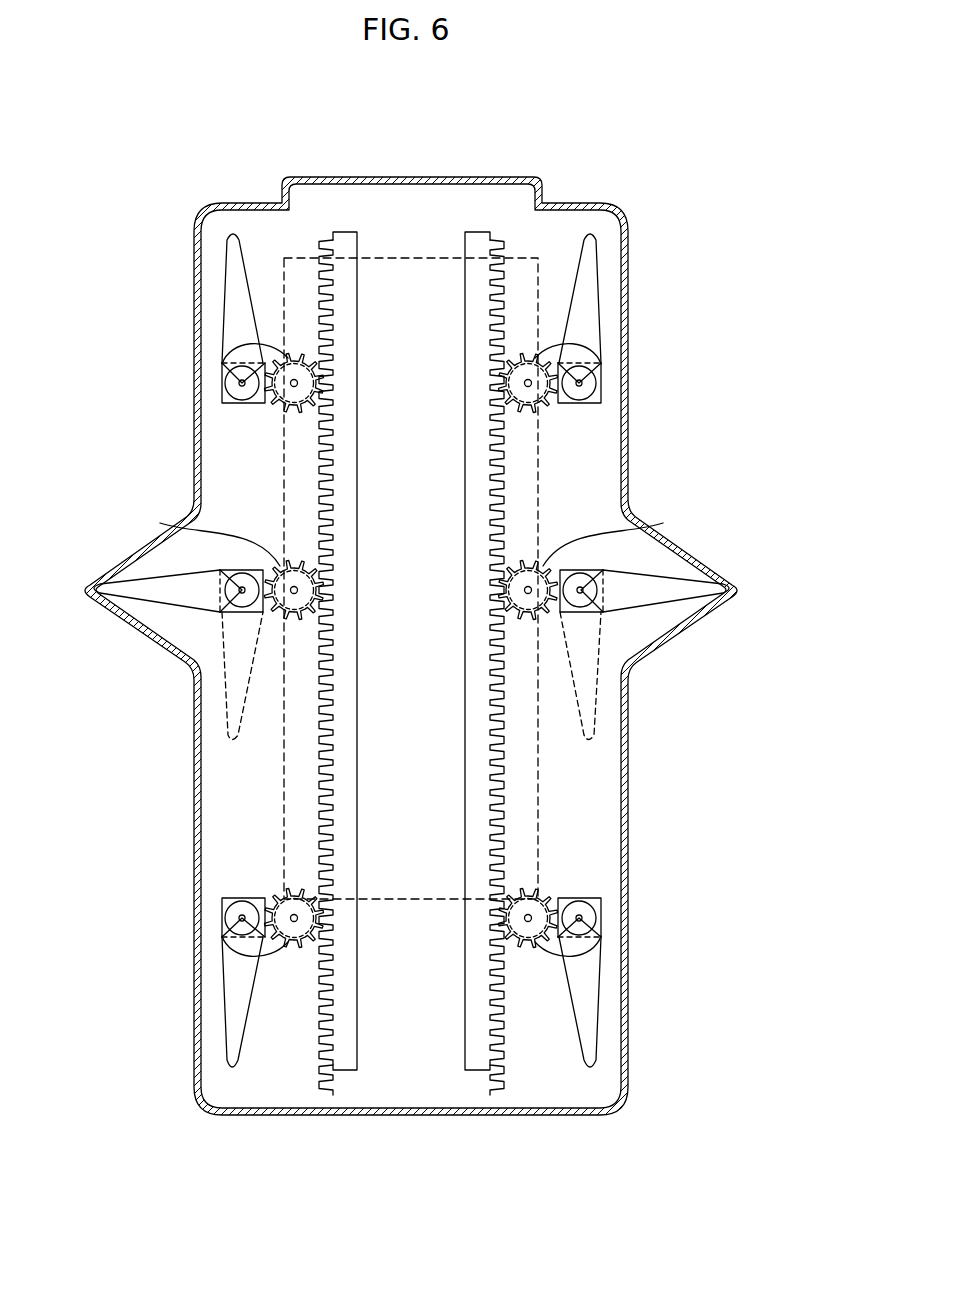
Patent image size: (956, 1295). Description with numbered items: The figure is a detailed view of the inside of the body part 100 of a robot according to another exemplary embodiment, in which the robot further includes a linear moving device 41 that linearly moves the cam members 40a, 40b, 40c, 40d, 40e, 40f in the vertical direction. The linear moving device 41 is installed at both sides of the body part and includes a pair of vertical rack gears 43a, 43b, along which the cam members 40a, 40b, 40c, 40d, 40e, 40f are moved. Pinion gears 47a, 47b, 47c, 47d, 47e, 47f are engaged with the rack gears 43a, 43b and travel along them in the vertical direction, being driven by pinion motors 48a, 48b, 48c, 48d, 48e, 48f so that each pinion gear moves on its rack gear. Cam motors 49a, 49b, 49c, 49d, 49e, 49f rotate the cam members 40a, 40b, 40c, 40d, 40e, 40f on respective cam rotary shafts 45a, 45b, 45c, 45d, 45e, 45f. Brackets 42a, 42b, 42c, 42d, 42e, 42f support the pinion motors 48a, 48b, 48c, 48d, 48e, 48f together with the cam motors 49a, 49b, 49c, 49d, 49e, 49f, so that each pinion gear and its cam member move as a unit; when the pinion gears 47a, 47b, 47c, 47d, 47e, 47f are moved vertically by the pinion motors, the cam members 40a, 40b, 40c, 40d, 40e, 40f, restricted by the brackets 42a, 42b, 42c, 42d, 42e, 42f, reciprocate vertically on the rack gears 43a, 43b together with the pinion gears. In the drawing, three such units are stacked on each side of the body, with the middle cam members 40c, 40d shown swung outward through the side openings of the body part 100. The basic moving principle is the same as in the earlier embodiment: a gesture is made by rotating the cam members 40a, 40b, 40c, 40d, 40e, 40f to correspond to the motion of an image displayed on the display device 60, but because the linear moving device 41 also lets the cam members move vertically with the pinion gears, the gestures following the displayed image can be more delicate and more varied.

The body part 100 is at (283, 160).
The display device 60 is at (406, 257).
The linear moving device 41 is at (411, 663).
The rack gear 43a is at (357, 398).
The rack gear 43b is at (466, 446).
The cam member 40a is at (230, 302).
The cam member 40b is at (592, 302).
The cam member 40c is at (98, 598).
The cam member 40d is at (723, 604).
The cam member 40e is at (228, 1000).
The cam member 40f is at (596, 1000).
The bracket 42a is at (226, 404).
The bracket 42b is at (595, 404).
The bracket 42c is at (263, 586).
The bracket 42d is at (565, 587).
The bracket 42e is at (224, 900).
The bracket 42f is at (599, 898).
The cam rotary shaft 45a is at (235, 386).
The cam rotary shaft 45b is at (598, 370).
The cam rotary shaft 45c is at (243, 607).
The cam rotary shaft 45d is at (592, 608).
The cam rotary shaft 45e is at (236, 922).
The cam rotary shaft 45f is at (588, 922).
The pinion gear 47a is at (287, 411).
The pinion gear 47b is at (534, 412).
The pinion gear 47c is at (292, 614).
The pinion gear 47d is at (528, 614).
The pinion gear 47e is at (287, 892).
The pinion gear 47f is at (534, 892).
The pinion motor 48a is at (224, 364).
The pinion motor 48b is at (597, 364).
The pinion motor 48c is at (168, 528).
The pinion motor 48d is at (660, 527).
The pinion motor 48e is at (222, 937).
The pinion motor 48f is at (600, 937).
The cam motor 49a is at (240, 388).
The cam motor 49b is at (588, 390).
The cam motor 49c is at (172, 656).
The cam motor 49d is at (603, 620).
The cam motor 49e is at (240, 916).
The cam motor 49f is at (588, 912).